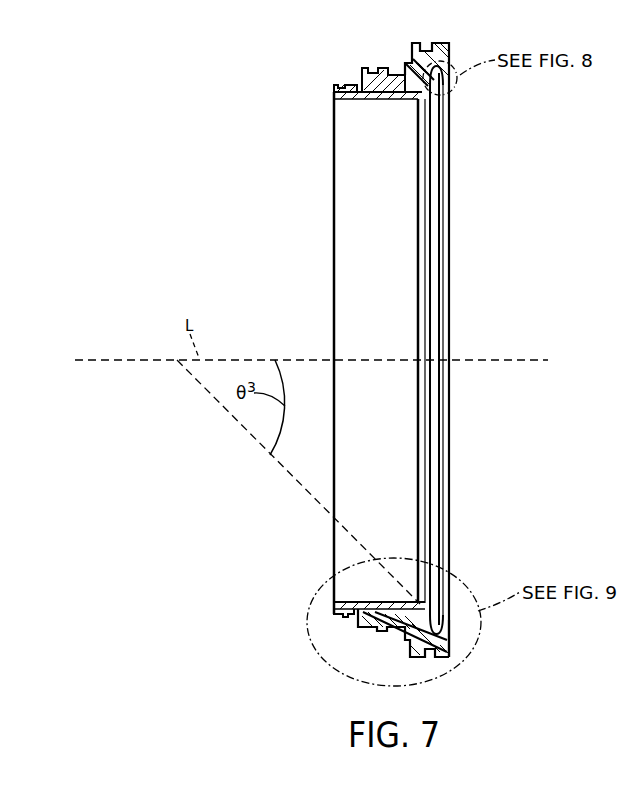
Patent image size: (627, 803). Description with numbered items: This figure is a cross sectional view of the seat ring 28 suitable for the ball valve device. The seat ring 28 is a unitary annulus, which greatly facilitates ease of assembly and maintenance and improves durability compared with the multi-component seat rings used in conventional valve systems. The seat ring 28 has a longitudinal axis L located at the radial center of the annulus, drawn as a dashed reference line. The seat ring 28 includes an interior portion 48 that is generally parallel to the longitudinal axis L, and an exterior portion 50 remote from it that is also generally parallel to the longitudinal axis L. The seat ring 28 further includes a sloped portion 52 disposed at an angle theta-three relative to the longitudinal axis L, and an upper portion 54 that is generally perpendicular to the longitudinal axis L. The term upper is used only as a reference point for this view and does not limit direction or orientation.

The seat ring 28 is at (220, 524).
The interior portion 48 is at (368, 602).
The exterior portion 50 is at (378, 654).
The sloped portion 52 is at (439, 600).
The upper portion 54 is at (457, 638).